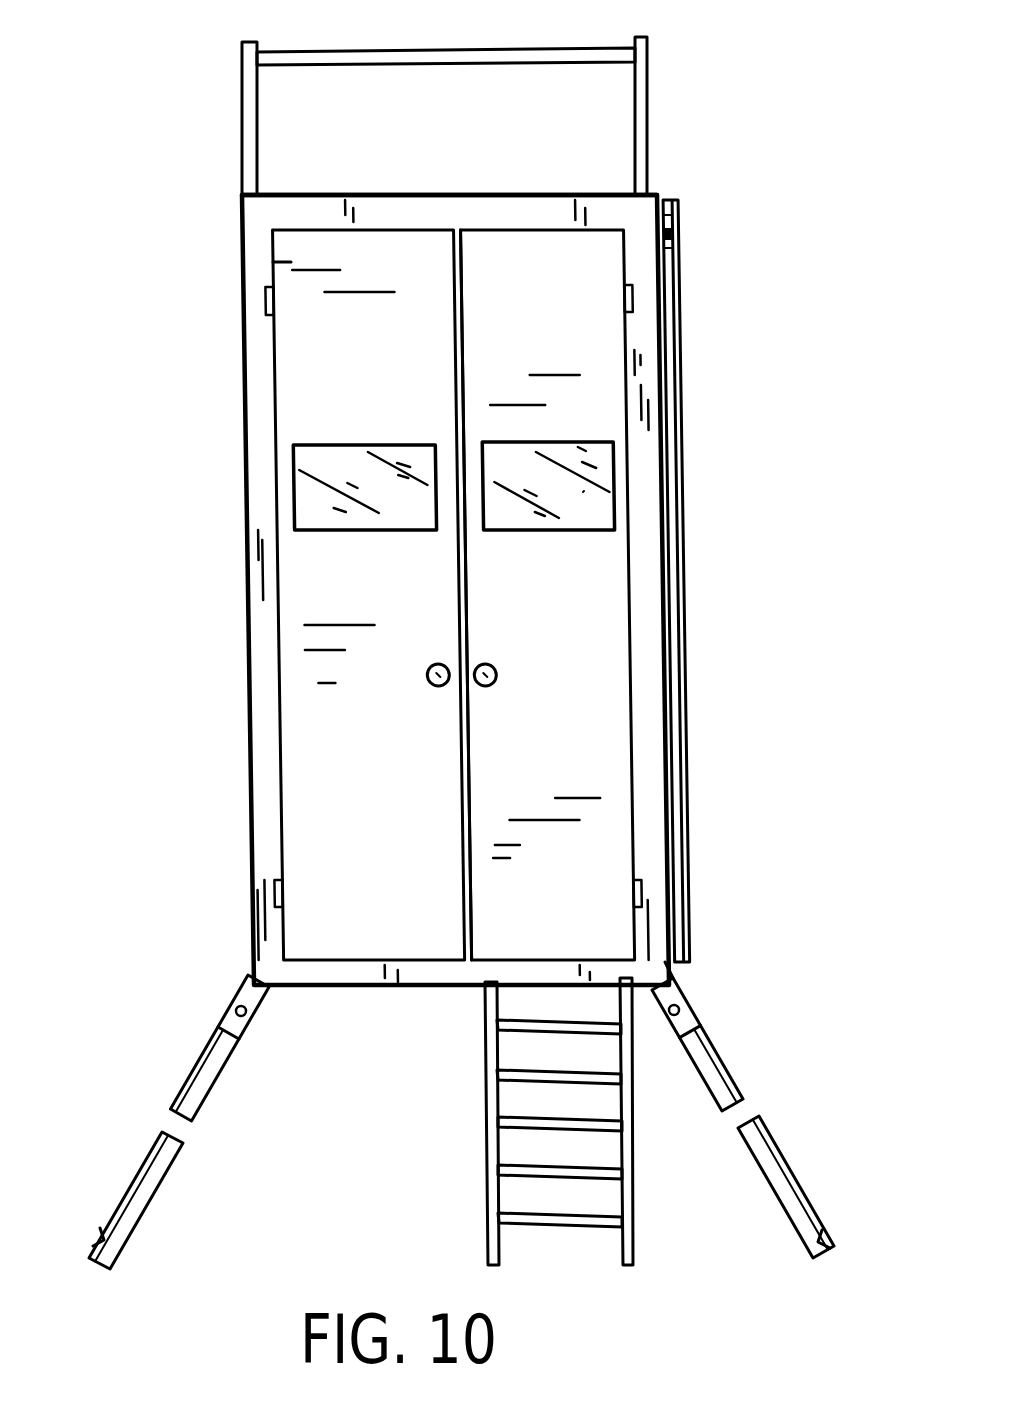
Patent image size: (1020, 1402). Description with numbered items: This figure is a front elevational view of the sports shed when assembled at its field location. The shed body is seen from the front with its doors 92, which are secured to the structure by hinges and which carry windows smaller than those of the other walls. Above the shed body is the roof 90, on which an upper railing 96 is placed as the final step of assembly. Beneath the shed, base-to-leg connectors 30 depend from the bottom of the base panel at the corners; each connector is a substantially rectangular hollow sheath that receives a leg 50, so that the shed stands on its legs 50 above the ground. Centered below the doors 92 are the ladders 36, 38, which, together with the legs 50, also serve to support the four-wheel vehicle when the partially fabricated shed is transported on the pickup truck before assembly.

The base-to-leg connector 30 is at (693, 985).
The ladder 36 is at (632, 1132).
The ladder 38 is at (683, 622).
The leg 50 is at (172, 1112).
The roof 90 is at (441, 116).
The door 92 is at (617, 595).
The upper railing 96 is at (242, 125).